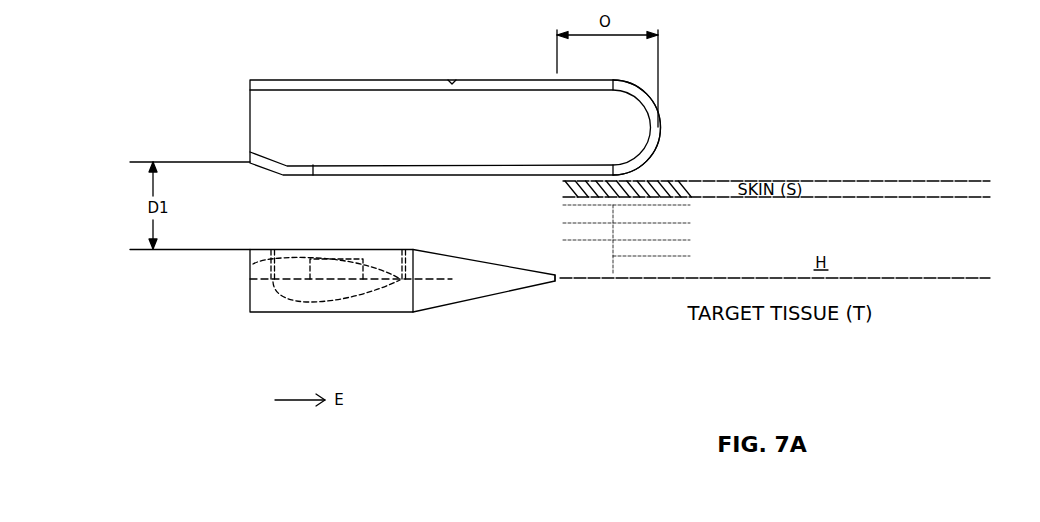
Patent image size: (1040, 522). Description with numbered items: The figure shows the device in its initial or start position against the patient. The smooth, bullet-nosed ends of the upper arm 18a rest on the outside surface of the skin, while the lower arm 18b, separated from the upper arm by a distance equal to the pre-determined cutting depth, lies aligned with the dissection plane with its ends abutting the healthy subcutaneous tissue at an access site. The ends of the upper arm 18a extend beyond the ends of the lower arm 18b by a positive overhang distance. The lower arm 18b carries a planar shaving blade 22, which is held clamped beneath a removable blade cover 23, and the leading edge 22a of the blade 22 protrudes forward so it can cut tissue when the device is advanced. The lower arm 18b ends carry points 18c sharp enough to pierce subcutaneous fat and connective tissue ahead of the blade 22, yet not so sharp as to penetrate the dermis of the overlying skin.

The upper arm 18a is at (353, 86).
The lower arm 18b is at (273, 307).
The points 18c is at (557, 279).
The blade 22 is at (323, 284).
The leading edge 22a is at (452, 279).
The blade cover 23 is at (273, 251).